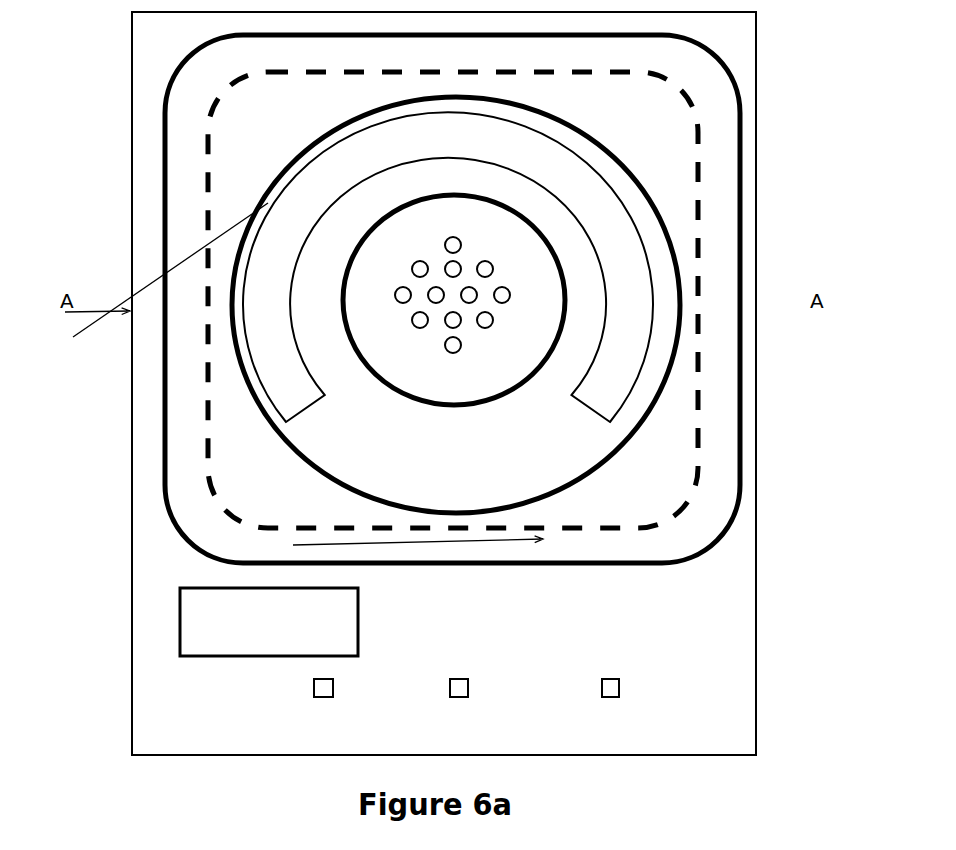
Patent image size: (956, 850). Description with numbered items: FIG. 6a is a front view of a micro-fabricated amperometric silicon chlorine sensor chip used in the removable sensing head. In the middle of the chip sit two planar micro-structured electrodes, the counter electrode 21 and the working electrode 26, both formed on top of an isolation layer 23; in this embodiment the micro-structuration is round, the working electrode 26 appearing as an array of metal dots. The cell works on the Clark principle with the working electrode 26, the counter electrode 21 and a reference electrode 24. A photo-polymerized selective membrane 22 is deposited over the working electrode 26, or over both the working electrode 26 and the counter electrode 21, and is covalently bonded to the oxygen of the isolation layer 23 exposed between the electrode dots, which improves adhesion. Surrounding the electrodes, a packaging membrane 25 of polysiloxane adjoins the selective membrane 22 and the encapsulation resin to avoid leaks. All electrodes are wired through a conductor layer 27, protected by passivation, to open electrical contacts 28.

The counter electrode 21 is at (266, 238).
The selective membrane 22 is at (332, 276).
The isolation layer 23 is at (232, 469).
The reference electrode 24 is at (205, 620).
The packaging membrane 25 is at (726, 141).
The working electrode 26 is at (504, 269).
The conductor layer 27 is at (630, 593).
The electrical contact 28 is at (345, 691).